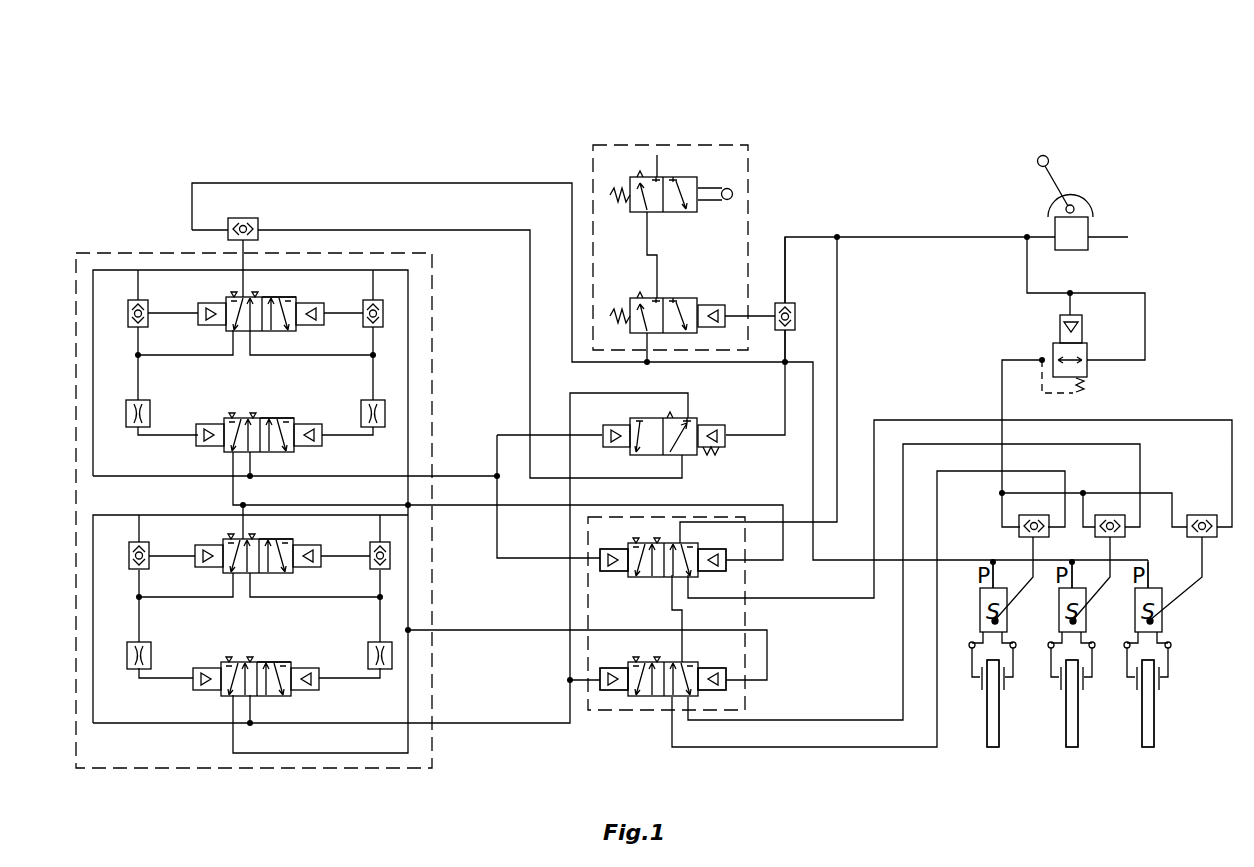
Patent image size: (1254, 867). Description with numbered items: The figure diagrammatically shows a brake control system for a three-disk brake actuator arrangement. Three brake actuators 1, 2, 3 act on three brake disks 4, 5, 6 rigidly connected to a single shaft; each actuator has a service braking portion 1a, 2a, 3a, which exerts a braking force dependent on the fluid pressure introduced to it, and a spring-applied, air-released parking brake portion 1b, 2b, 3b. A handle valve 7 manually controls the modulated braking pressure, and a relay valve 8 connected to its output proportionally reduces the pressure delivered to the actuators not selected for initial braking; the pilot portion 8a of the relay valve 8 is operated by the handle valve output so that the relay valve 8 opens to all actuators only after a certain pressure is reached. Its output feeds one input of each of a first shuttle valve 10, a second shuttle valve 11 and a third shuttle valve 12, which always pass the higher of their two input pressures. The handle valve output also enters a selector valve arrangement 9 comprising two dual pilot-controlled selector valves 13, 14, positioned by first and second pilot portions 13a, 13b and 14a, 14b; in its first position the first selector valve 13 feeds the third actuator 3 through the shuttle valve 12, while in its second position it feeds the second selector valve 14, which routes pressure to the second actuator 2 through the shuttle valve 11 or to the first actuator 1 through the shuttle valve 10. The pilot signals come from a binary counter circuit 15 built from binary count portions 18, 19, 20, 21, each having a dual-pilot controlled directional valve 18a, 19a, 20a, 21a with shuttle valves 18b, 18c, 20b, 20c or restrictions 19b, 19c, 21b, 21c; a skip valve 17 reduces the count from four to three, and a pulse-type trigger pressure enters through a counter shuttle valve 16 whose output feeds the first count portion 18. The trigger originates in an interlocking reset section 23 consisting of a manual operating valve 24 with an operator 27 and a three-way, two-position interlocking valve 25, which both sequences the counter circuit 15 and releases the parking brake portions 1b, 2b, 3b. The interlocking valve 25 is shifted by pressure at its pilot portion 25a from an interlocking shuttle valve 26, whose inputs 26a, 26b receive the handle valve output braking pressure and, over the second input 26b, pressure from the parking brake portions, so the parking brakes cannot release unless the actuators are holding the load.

The brake actuator 1 is at (977, 597).
The service braking portion 1a is at (992, 621).
The parking brake portion 1b is at (996, 590).
The brake actuator 2 is at (1056, 612).
The service braking portion 2a is at (1070, 621).
The parking brake portion 2b is at (1074, 590).
The brake actuator 3 is at (1133, 613).
The service braking portion 3a is at (1152, 622).
The parking brake portion 3b is at (1150, 590).
The brake disk 4 is at (993, 735).
The brake disk 5 is at (1072, 735).
The brake disk 6 is at (1148, 735).
The handle valve 7 is at (1078, 227).
The relay valve 8 is at (1079, 351).
The pilot portion 8a is at (1079, 333).
The selector valve arrangement 9 is at (747, 703).
The first shuttle valve 10 is at (1043, 533).
The second shuttle valve 11 is at (1119, 533).
The third shuttle valve 12 is at (1211, 536).
The first selector valve 13 is at (652, 574).
The first pilot portion 13a is at (617, 572).
The second pilot portion 13b is at (703, 569).
The second selector valve 14 is at (652, 697).
The first pilot portion 14a is at (619, 693).
The second pilot portion 14b is at (704, 676).
The binary counter circuit 15 is at (433, 768).
The counter shuttle valve 16 is at (253, 226).
The skip valve 17 is at (692, 429).
The binary count portion 18 is at (226, 295).
The dual-pilot controlled directional valve 18a is at (281, 291).
The shuttle valve 18b is at (146, 326).
The shuttle valve 18c is at (369, 301).
The binary count portion 19 is at (224, 416).
The dual-pilot controlled directional valve 19a is at (272, 418).
The restriction 19b is at (142, 404).
The restriction 19c is at (365, 403).
The binary count portion 20 is at (223, 538).
The dual-pilot controlled directional valve 20a is at (281, 533).
The shuttle valve 20b is at (148, 569).
The shuttle valve 20c is at (368, 545).
The binary count portion 21 is at (221, 660).
The dual-pilot controlled directional valve 21a is at (273, 660).
The restriction 21b is at (144, 645).
The restriction 21c is at (369, 645).
The interlocking reset section 23 is at (751, 150).
The manual operating valve 24 is at (678, 177).
The interlocking valve 25 is at (676, 298).
The pilot portion 25a is at (704, 306).
The interlocking shuttle valve 26 is at (796, 318).
The shuttle valve inlet 26a is at (787, 302).
The second input 26b is at (787, 331).
The operator 27 is at (725, 200).